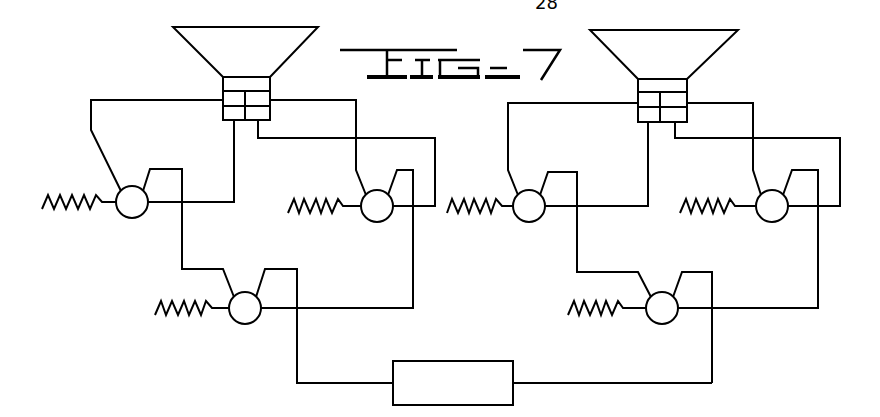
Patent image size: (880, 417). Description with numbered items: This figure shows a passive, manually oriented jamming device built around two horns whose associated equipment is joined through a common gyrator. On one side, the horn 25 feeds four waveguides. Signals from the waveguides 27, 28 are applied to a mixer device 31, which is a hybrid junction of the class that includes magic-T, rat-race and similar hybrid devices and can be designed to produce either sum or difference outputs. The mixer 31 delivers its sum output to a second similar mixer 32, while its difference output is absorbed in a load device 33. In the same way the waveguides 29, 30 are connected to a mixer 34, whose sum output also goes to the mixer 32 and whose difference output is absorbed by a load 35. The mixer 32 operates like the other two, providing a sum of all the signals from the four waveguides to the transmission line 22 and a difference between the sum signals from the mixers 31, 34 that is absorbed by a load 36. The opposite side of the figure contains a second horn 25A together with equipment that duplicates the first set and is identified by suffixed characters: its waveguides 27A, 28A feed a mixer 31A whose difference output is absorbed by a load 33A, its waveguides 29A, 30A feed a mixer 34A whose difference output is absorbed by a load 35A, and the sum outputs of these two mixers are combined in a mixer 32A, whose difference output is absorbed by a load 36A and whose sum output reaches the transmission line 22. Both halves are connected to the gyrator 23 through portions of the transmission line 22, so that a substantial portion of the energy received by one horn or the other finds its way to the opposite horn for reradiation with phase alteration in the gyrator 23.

The transmission line 22 is at (358, 385).
The gyrator 23 is at (430, 361).
The horn 25 is at (228, 82).
The waveguide 27 is at (233, 100).
The waveguide 28 is at (232, 116).
The waveguide 29 is at (262, 114).
The waveguide 30 is at (258, 100).
The mixer device 31 is at (136, 186).
The second mixer 32 is at (244, 292).
The load device 33 is at (80, 206).
The mixer 34 is at (372, 190).
The load 35 is at (327, 212).
The load 36 is at (195, 314).
The second horn 25A is at (687, 82).
The waveguide 27A is at (648, 102).
The waveguide 28A is at (648, 117).
The waveguide 29A is at (680, 116).
The waveguide 30A is at (678, 102).
The mixer 31A is at (528, 191).
The mixer 32A is at (659, 292).
The load 33A is at (497, 212).
The mixer 34A is at (770, 191).
The load 35A is at (730, 212).
The load 36A is at (618, 316).